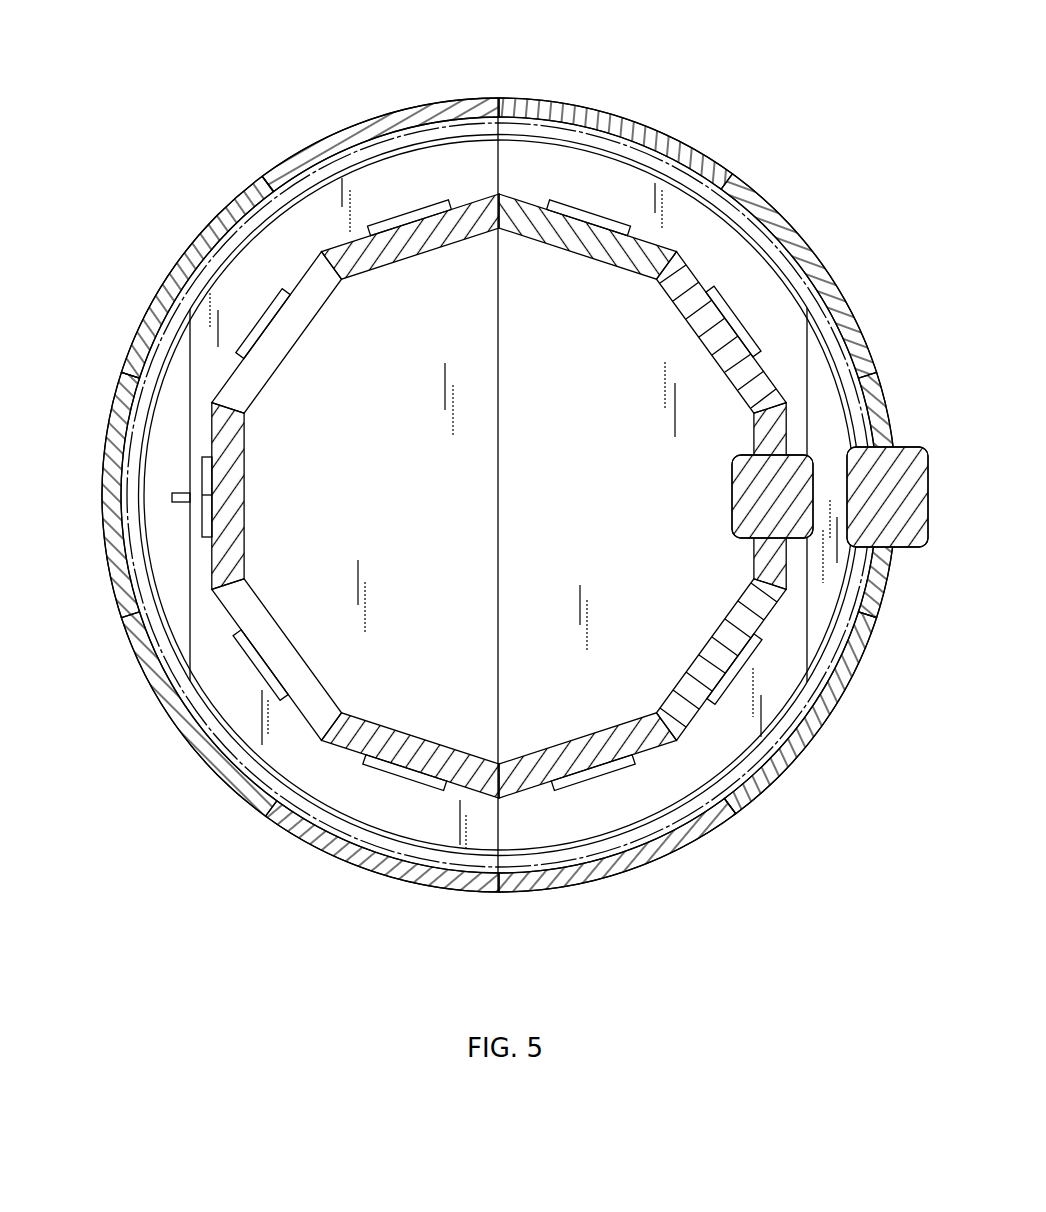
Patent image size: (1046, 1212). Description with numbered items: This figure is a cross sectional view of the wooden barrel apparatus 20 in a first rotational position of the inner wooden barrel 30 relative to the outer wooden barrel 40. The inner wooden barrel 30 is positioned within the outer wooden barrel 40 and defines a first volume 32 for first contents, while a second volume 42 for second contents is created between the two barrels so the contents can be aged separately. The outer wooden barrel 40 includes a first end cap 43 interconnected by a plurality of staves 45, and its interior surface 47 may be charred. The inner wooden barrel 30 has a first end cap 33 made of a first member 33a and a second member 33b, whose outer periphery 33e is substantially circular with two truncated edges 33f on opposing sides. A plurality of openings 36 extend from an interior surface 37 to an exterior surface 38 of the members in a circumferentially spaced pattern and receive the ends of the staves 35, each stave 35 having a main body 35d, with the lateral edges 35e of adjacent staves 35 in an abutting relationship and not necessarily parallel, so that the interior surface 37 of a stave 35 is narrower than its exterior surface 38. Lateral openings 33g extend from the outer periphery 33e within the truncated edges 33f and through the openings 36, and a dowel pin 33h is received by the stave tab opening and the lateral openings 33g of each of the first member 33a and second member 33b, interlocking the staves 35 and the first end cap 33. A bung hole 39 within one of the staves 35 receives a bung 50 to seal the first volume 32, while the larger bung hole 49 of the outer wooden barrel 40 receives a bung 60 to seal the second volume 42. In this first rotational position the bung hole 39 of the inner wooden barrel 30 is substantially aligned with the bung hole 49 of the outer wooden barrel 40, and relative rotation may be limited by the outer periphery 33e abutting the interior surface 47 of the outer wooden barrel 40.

The wooden barrel apparatus 20 is at (178, 104).
The outer wooden barrel 40 is at (250, 160).
The inner wooden barrel 30 is at (331, 224).
The outer periphery 33e is at (450, 127).
The staves 35 is at (705, 276).
The main body 35d is at (563, 237).
The lateral edges 35e is at (660, 288).
The staves 45 is at (96, 435).
The first end cap 43 is at (170, 372).
The second volume 42 is at (792, 330).
The bung hole 49 is at (866, 447).
The bung 60 is at (905, 447).
The truncated edges 33f is at (188, 435).
The bung hole 39 is at (770, 455).
The bung 50 is at (790, 482).
The dowel pin 33h is at (173, 494).
The second member 33b is at (572, 470).
The lateral openings 33g is at (194, 500).
The first member 33a is at (410, 544).
The interior surface 37 is at (737, 610).
The openings 36 is at (262, 641).
The interior surface 47 is at (130, 586).
The first end cap 33 is at (524, 660).
The exterior surface 38 is at (770, 614).
The first volume 32 is at (374, 704).